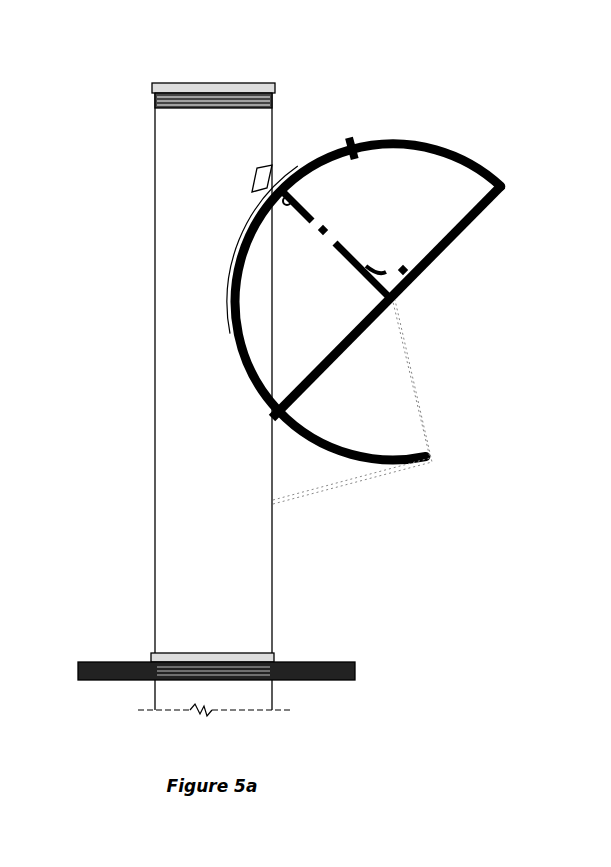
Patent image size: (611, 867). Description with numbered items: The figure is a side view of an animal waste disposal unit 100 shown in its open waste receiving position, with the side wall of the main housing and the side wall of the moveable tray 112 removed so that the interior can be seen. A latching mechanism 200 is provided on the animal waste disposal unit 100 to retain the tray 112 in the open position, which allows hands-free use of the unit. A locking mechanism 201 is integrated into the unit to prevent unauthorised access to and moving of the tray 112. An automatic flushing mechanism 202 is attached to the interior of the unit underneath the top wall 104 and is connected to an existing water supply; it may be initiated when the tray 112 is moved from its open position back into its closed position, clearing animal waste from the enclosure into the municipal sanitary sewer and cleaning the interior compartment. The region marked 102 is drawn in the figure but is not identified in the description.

The animal waste disposal unit 100 is at (123, 132).
The panel original position 102 is at (313, 500).
The top wall 104 is at (256, 170).
The tray 112 is at (475, 138).
The latching mechanism 200 is at (272, 418).
The locking mechanism 201 is at (355, 141).
The flushing mechanism 202 is at (252, 189).